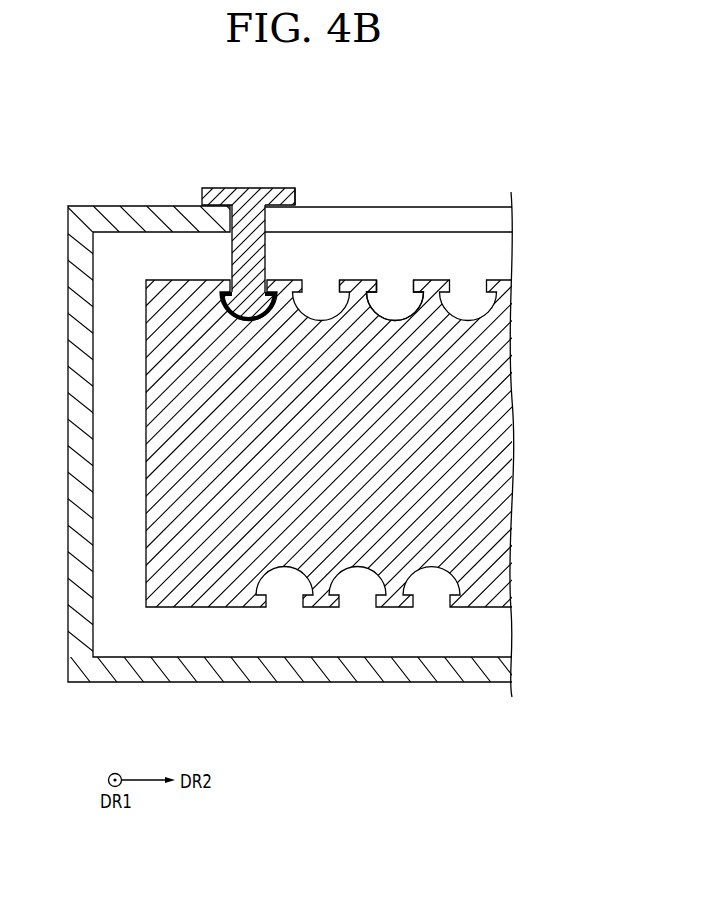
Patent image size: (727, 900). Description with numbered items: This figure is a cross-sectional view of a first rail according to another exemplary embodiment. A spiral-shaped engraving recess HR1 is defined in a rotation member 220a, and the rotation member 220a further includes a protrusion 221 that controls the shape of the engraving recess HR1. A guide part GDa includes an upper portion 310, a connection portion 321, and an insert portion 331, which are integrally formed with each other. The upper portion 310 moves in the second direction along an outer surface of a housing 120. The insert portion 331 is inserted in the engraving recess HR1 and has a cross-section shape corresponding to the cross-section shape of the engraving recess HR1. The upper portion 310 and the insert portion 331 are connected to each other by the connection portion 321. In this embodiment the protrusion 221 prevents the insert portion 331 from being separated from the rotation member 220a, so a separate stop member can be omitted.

The housing 120 is at (438, 220).
The rotation member 220a is at (505, 448).
The protrusion 221 is at (357, 285).
The engraving recess HR1 is at (396, 294).
The upper portion 310 is at (278, 200).
The connection portion 321 is at (245, 257).
The insert portion 331 is at (258, 304).
The guide part GDa is at (292, 182).